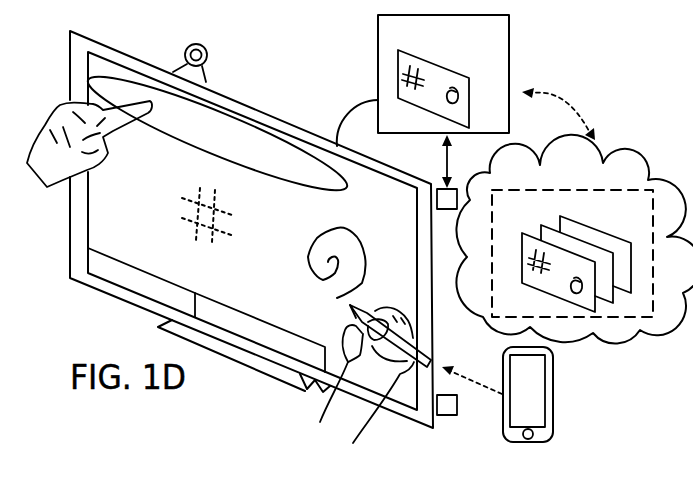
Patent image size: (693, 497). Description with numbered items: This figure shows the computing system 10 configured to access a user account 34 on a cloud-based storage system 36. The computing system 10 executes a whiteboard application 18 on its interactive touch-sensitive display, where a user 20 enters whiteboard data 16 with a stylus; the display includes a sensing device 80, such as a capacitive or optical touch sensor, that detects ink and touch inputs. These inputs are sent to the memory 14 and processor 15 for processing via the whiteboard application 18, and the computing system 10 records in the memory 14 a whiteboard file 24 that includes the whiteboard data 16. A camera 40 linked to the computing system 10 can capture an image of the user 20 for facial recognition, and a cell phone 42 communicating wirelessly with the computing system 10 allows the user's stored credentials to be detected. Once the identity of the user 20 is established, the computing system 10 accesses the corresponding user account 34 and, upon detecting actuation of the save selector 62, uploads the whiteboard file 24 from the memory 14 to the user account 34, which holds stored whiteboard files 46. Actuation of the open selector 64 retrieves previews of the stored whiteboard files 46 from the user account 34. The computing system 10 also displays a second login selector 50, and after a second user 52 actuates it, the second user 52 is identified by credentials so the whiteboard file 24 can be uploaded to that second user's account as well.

The computing system 10 is at (301, 90).
The memory 14 is at (508, 130).
The processor 15 is at (457, 190).
The whiteboard data 16 is at (308, 263).
The whiteboard application 18 is at (127, 234).
The user 20 is at (331, 431).
The whiteboard file 24 is at (442, 63).
The user account 34 is at (649, 224).
The cloud-based storage system 36 is at (488, 275).
The camera 40 is at (185, 55).
The cell phone 42 is at (553, 393).
The stored whiteboard files 46 is at (567, 300).
The second login selector 50 is at (195, 147).
The second user 52 is at (82, 177).
The save selector 62 is at (141, 282).
The open selector 64 is at (260, 332).
The sensing device 80 is at (457, 403).